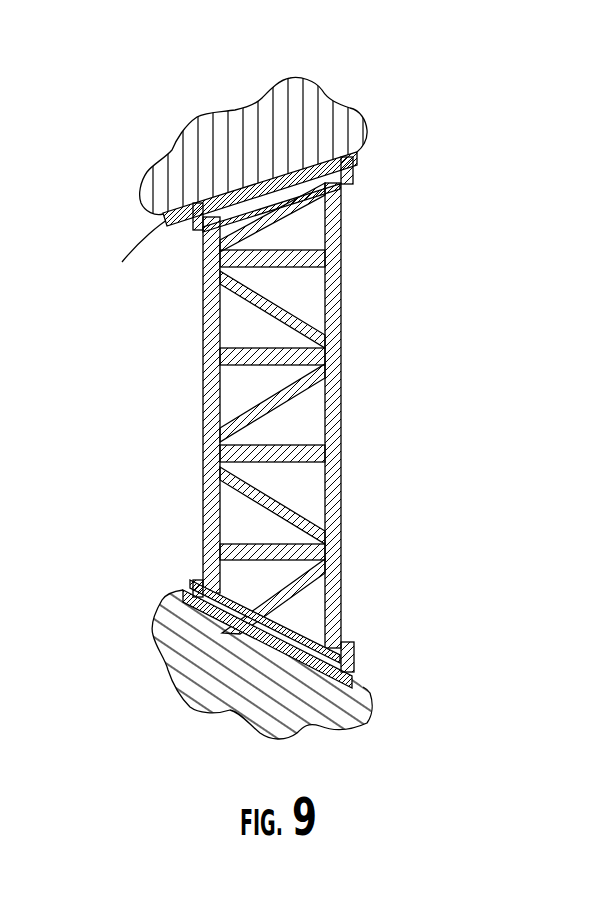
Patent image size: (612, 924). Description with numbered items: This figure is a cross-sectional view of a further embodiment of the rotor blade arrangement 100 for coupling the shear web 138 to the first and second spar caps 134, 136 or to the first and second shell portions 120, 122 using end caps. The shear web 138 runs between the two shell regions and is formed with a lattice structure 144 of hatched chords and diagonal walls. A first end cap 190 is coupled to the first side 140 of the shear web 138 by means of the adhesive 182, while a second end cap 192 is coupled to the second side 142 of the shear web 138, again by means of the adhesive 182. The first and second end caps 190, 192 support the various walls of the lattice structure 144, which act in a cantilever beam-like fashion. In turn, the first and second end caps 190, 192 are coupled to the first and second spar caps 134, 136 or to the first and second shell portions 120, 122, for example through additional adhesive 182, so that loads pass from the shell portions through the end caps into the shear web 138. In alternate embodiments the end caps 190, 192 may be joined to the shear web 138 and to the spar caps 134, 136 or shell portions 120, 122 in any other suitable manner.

The structure assembly 100 is at (248, 391).
The second shell portion 122 is at (204, 171).
The second spar cap 136 is at (152, 222).
The first shell portion 120 is at (304, 670).
The first spar cap 134 is at (373, 690).
The shear web 138 is at (283, 415).
The second side 142 is at (176, 254).
The first side 140 is at (362, 631).
The lattice structure 144 is at (245, 496).
The adhesive 182 is at (354, 162).
The second end cap 192 is at (351, 180).
The first end cap 190 is at (188, 585).